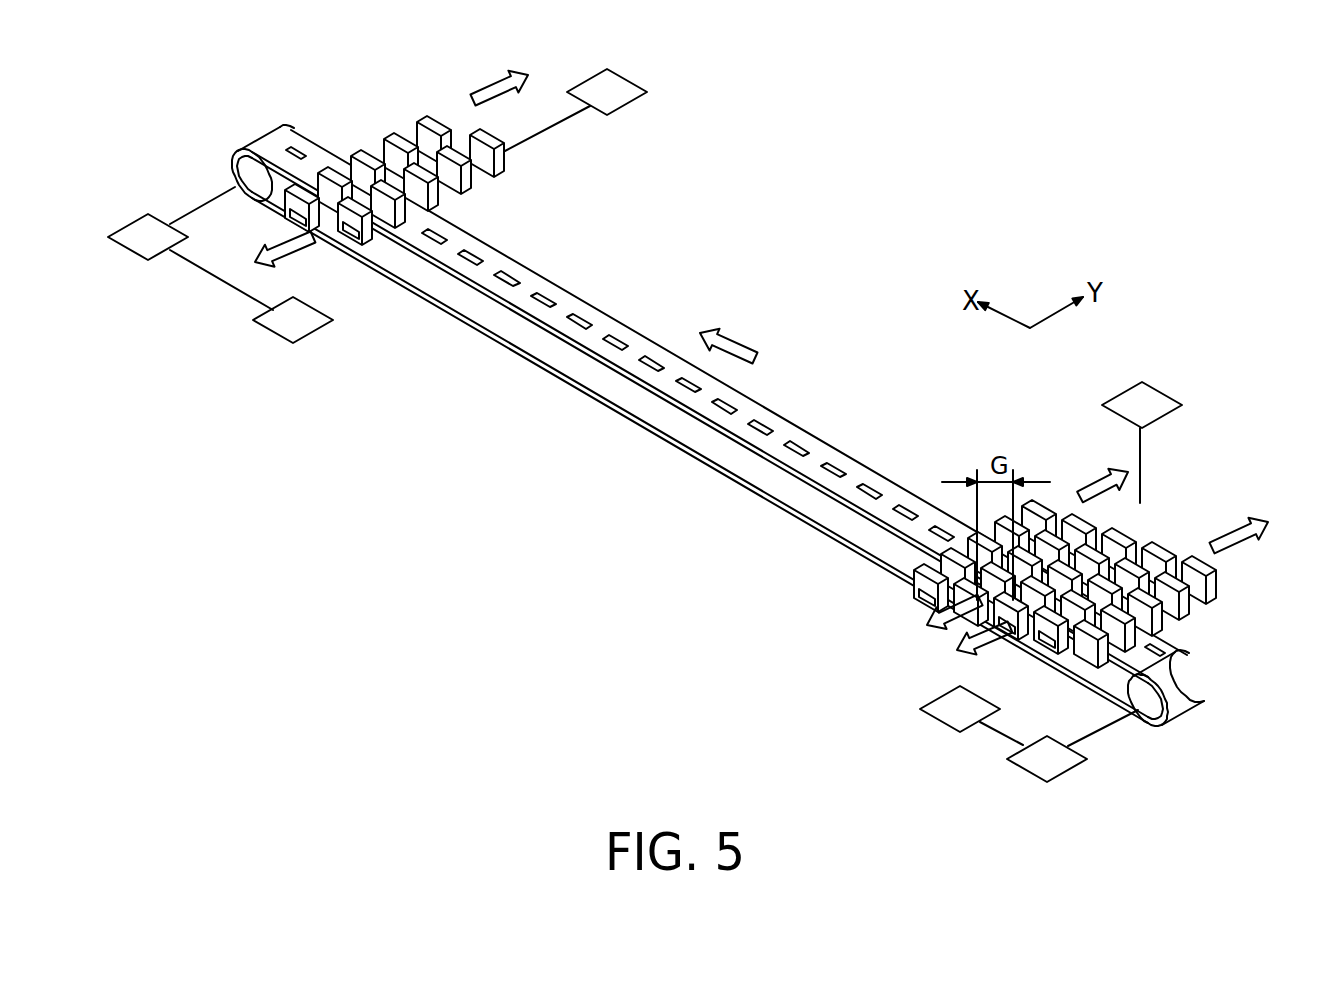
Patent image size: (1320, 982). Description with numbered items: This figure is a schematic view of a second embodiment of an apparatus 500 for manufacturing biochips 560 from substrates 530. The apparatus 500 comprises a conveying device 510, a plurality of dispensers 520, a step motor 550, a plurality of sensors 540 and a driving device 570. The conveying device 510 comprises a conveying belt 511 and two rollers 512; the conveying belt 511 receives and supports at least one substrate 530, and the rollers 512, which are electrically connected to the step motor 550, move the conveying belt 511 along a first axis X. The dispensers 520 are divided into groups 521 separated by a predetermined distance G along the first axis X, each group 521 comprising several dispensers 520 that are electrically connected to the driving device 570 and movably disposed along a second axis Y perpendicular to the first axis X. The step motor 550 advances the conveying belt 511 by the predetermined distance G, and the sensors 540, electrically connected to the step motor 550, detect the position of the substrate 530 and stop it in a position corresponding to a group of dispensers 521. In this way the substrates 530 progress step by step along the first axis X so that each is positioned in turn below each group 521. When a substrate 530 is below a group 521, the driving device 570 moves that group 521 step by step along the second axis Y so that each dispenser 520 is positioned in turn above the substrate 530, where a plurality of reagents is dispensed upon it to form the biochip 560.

The apparatus 500 is at (878, 215).
The conveying device 510 is at (1212, 726).
The conveying belt 511 is at (1208, 680).
The rollers 512 is at (1152, 712).
The dispensers 520 is at (769, 392).
The group of dispensers 521 is at (1195, 540).
The substrate 530 is at (1165, 650).
The sensors 540 is at (287, 329).
The step motor 550 is at (143, 246).
The biochip 560 is at (296, 147).
The driving device 570 is at (638, 82).